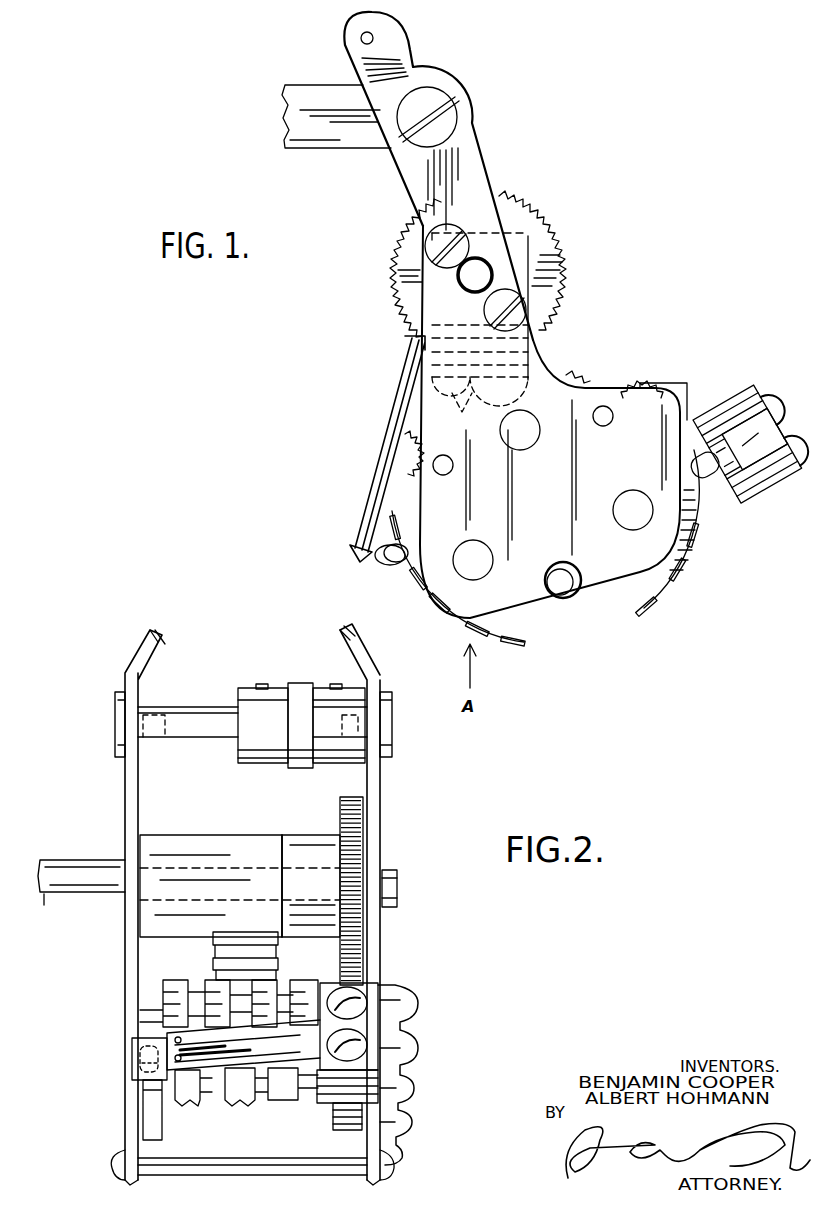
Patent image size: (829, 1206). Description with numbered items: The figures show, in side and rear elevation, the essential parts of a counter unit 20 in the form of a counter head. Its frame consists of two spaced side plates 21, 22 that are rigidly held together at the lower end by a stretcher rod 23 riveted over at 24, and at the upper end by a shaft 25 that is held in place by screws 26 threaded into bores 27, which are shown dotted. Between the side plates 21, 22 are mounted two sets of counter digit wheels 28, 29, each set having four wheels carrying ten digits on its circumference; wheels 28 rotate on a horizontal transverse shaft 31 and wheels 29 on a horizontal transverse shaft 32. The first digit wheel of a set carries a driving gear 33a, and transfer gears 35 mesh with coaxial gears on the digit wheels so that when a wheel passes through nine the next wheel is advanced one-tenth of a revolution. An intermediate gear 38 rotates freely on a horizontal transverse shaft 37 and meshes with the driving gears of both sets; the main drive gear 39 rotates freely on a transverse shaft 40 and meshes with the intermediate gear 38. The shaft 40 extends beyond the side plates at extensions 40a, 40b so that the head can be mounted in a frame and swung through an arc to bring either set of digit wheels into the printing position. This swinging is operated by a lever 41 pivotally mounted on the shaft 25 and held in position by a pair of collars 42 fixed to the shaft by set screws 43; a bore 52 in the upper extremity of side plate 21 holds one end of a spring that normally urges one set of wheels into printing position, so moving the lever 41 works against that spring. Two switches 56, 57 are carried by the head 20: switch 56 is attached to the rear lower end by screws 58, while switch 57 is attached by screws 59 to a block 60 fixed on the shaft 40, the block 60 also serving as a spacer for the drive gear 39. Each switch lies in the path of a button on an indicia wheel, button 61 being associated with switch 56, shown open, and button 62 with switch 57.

In FIG. 1, the counter unit 20 is at (649, 352).
In FIG. 2, the counter unit 20 is at (410, 950).
In FIG. 2, the side plate 21 is at (382, 846).
In FIG. 1, the side plate 22 is at (565, 605).
In FIG. 2, the side plate 22 is at (124, 796).
In FIG. 2, the stretcher rod 23 is at (248, 1152).
In FIG. 1, the rivet 24 is at (596, 556).
In FIG. 2, the rivet 24 is at (110, 1166).
In FIG. 2, the shaft 25 is at (208, 697).
In FIG. 1, the screw 26 is at (455, 105).
In FIG. 2, the screw 26 is at (114, 710).
In FIG. 2, the bore 27 is at (160, 712).
In FIG. 1, the counter digit wheels 28 is at (692, 550).
In FIG. 2, the counter digit wheels 28 is at (242, 1105).
In FIG. 1, the counter digit wheels 29 is at (410, 598).
In FIG. 1, the shaft 31 is at (636, 500).
In FIG. 1, the shaft 32 is at (477, 573).
In FIG. 2, the driving gear 33a is at (342, 1133).
In FIG. 1, the transfer gear 35 is at (626, 384).
In FIG. 2, the transfer gear 35 is at (176, 980).
In FIG. 1, the shaft 37 is at (525, 420).
In FIG. 1, the intermediate gear 38 is at (573, 378).
In FIG. 2, the intermediate gear 38 is at (330, 985).
In FIG. 1, the drive gear 39 is at (520, 200).
In FIG. 2, the drive gear 39 is at (339, 815).
In FIG. 1, the shaft 40 is at (476, 290).
In FIG. 2, the shaft 40 is at (116, 866).
In FIG. 2, the shaft extension 40a is at (396, 878).
In FIG. 2, the shaft extension 40b is at (56, 911).
In FIG. 1, the lever 41 is at (374, 148).
In FIG. 2, the lever 41 is at (314, 770).
In FIG. 2, the collar 42 is at (262, 764).
In FIG. 2, the set screw 43 is at (334, 686).
In FIG. 1, the bore 52 is at (360, 37).
In FIG. 2, the bore 52 is at (148, 636).
In FIG. 1, the switch 56 is at (770, 392).
In FIG. 2, the switch 56 is at (132, 1055).
In FIG. 1, the switch 57 is at (372, 478).
In FIG. 2, the switch 57 is at (212, 950).
In FIG. 1, the screw 58 is at (796, 430).
In FIG. 2, the screw 58 is at (380, 1000).
In FIG. 1, the screw 59 is at (480, 399).
In FIG. 1, the block 60 is at (530, 246).
In FIG. 2, the block 60 is at (228, 845).
In FIG. 1, the button 61 is at (712, 478).
In FIG. 2, the button 61 is at (130, 1084).
In FIG. 1, the button 62 is at (390, 565).